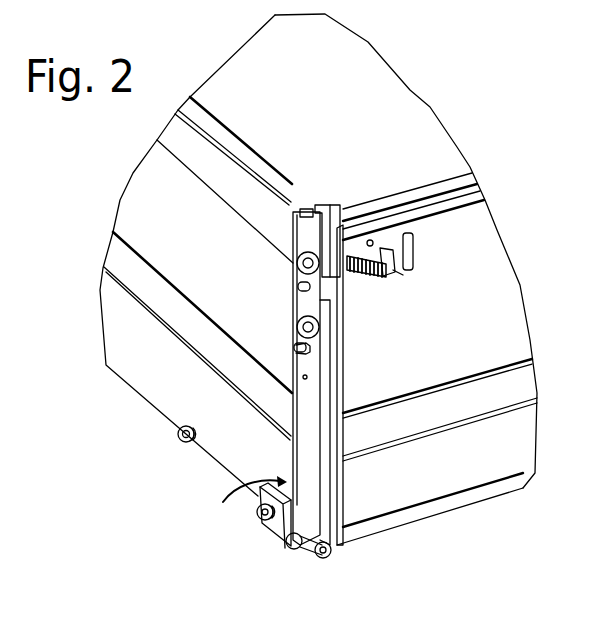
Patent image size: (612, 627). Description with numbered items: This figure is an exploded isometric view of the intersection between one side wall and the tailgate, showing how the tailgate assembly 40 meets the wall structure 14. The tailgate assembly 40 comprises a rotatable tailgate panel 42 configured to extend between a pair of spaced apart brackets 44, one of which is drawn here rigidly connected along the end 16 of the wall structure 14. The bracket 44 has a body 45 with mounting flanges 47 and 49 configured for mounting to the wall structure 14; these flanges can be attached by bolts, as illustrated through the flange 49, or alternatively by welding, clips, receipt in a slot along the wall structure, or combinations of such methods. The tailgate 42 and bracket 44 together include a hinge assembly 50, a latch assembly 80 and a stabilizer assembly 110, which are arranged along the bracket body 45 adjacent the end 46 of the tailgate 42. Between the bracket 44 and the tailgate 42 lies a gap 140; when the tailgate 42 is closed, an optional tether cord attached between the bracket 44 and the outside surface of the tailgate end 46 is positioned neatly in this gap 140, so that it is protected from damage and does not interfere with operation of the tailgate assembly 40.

The wall structure 14 is at (228, 168).
The end of the wall structure 16 is at (238, 501).
The tailgate assembly 40 is at (345, 561).
The tailgate panel 42 is at (479, 476).
The bracket 44 is at (276, 550).
The body 45 is at (304, 418).
The end of the tailgate 46 is at (382, 492).
The mounting flange 47 is at (330, 220).
The mounting flange 49 is at (262, 530).
The hinge assembly 50 is at (307, 566).
The latch assembly 80 is at (351, 293).
The stabilizer assembly 110 is at (331, 360).
The gap 140 is at (341, 214).